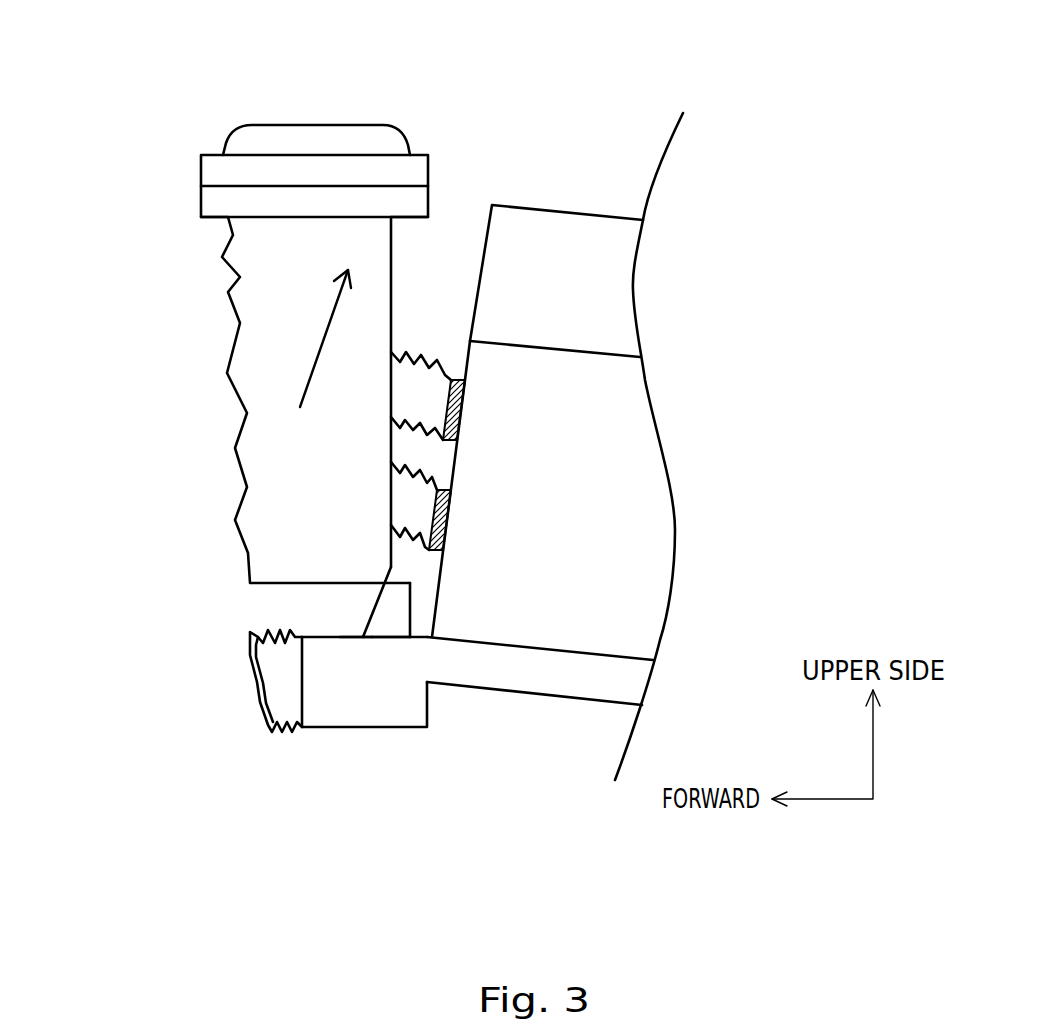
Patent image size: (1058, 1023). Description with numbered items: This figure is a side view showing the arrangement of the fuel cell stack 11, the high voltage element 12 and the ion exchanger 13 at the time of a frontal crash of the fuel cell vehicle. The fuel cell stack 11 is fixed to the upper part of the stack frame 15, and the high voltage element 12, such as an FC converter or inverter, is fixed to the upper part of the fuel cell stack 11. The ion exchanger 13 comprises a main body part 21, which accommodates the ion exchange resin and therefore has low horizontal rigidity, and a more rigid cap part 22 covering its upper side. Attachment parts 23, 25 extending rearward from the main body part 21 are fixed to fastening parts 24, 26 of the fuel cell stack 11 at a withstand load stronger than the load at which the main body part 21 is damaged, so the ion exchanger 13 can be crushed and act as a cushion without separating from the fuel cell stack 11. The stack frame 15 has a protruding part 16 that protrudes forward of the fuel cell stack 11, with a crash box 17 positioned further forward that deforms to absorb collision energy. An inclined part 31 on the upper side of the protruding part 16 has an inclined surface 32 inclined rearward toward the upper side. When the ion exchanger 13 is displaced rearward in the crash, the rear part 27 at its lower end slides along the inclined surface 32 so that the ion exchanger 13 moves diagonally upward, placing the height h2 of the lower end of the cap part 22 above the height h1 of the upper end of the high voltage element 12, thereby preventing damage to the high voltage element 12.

The fuel cell stack 11 is at (555, 628).
The high voltage element 12 is at (570, 228).
The ion exchanger 13 is at (372, 88).
The stack frame 15 is at (482, 678).
The protruding part 16 is at (320, 717).
The crash box 17 is at (270, 700).
The main body part 21 is at (253, 328).
The cap part 22 is at (217, 162).
The attachment part 23 is at (428, 365).
The fastening part 24 is at (463, 393).
The attachment part 25 is at (395, 497).
The fastening part 26 is at (445, 497).
The rear part 27 is at (387, 580).
The inclined part 31 is at (393, 625).
The inclined surface 32 is at (365, 622).
The position of the high voltage element h1 is at (490, 205).
The position of the cap part h2 is at (199, 186).